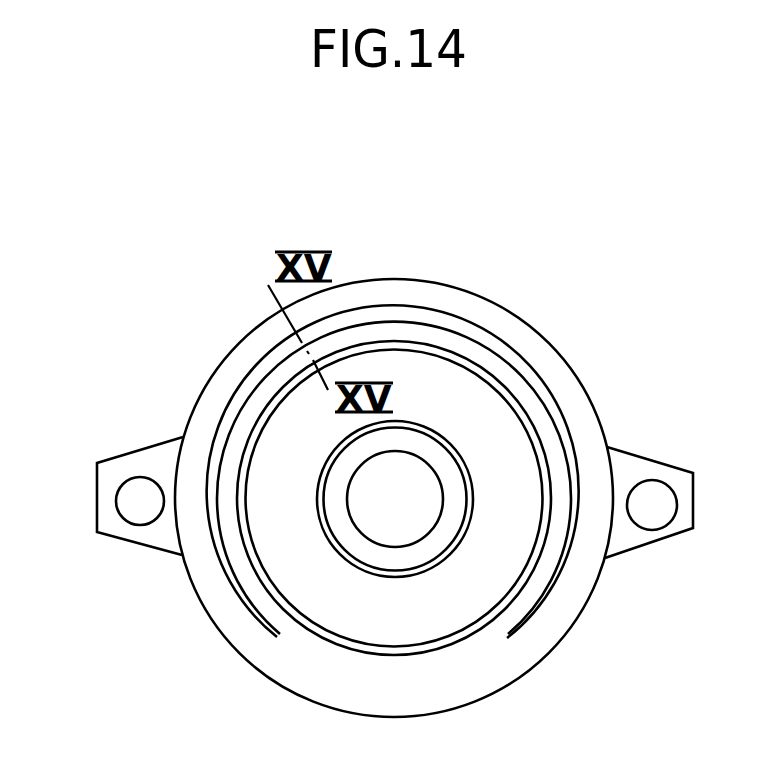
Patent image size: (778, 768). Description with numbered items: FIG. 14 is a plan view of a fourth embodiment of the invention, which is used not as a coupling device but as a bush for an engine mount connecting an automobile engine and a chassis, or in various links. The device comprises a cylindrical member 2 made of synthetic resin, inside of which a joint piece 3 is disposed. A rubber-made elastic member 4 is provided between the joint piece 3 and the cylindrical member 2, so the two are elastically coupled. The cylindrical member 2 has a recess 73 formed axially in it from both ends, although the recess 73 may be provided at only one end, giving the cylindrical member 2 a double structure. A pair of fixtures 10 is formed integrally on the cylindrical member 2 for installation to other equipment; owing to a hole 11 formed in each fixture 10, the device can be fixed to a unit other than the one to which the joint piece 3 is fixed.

The cylindrical member 2 is at (592, 563).
The joint piece 3 is at (342, 472).
The elastic member 4 is at (488, 423).
The fixture 10 is at (167, 537).
The hole 11 is at (124, 494).
The recess 73 is at (472, 326).